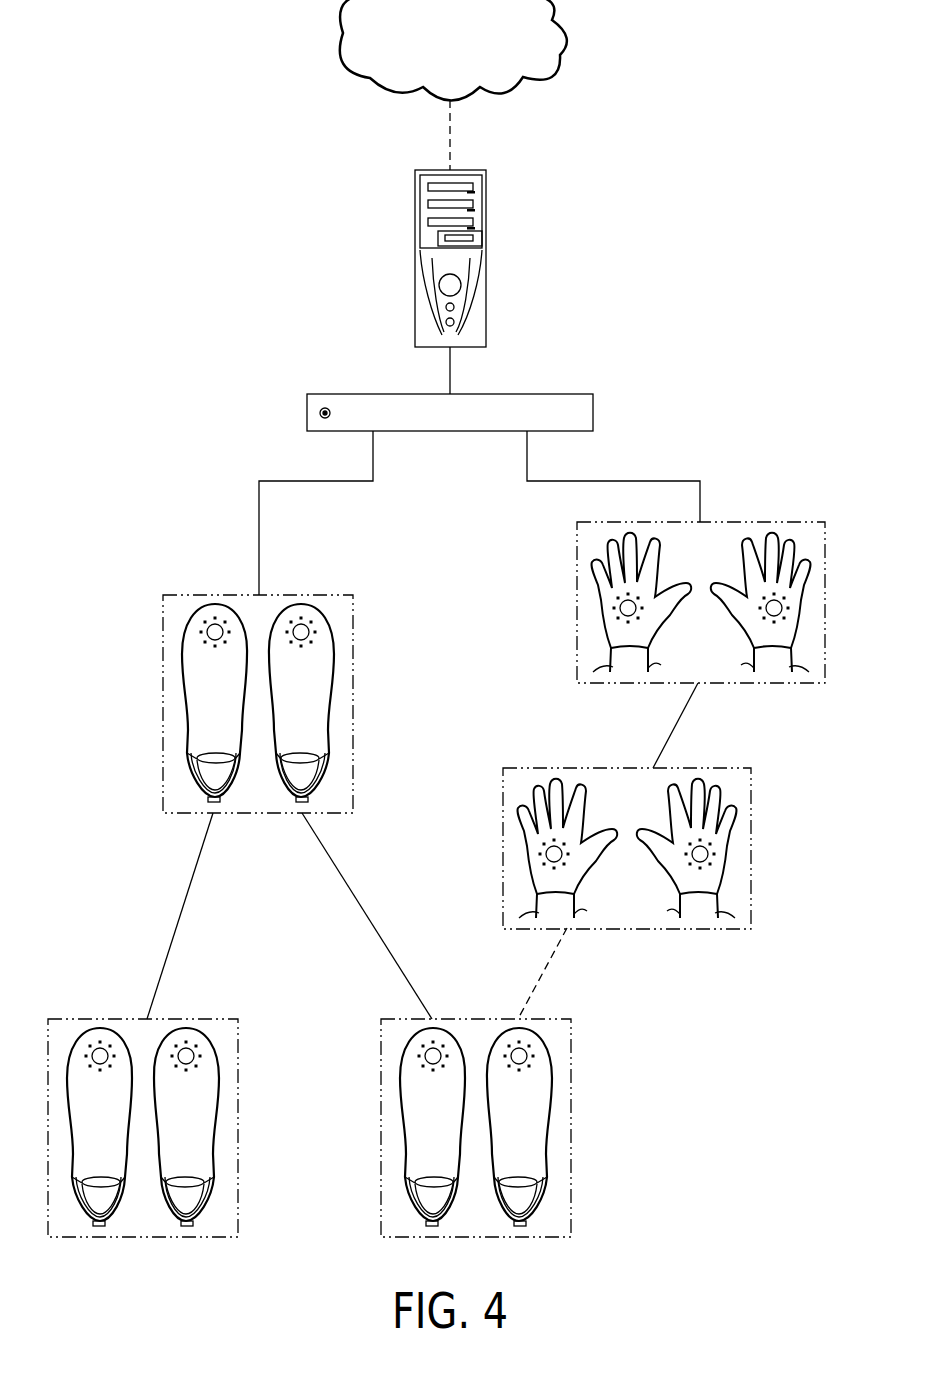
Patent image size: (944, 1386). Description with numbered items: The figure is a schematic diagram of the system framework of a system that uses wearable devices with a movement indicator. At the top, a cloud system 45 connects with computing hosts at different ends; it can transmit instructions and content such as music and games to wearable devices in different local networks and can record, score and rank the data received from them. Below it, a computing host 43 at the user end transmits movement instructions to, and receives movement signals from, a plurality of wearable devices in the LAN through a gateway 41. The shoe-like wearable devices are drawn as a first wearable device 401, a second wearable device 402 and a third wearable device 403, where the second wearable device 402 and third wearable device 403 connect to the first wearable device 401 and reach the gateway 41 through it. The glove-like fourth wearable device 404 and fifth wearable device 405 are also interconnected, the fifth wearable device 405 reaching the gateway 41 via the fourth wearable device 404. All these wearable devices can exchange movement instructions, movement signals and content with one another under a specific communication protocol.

The cloud system 45 is at (343, 47).
The computing host 43 is at (415, 203).
The gateway 41 is at (450, 432).
The first wearable device 401 is at (163, 706).
The second wearable device 402 is at (240, 1127).
The third wearable device 403 is at (573, 1127).
The fourth wearable device 404 is at (577, 626).
The fifth wearable device 405 is at (750, 828).